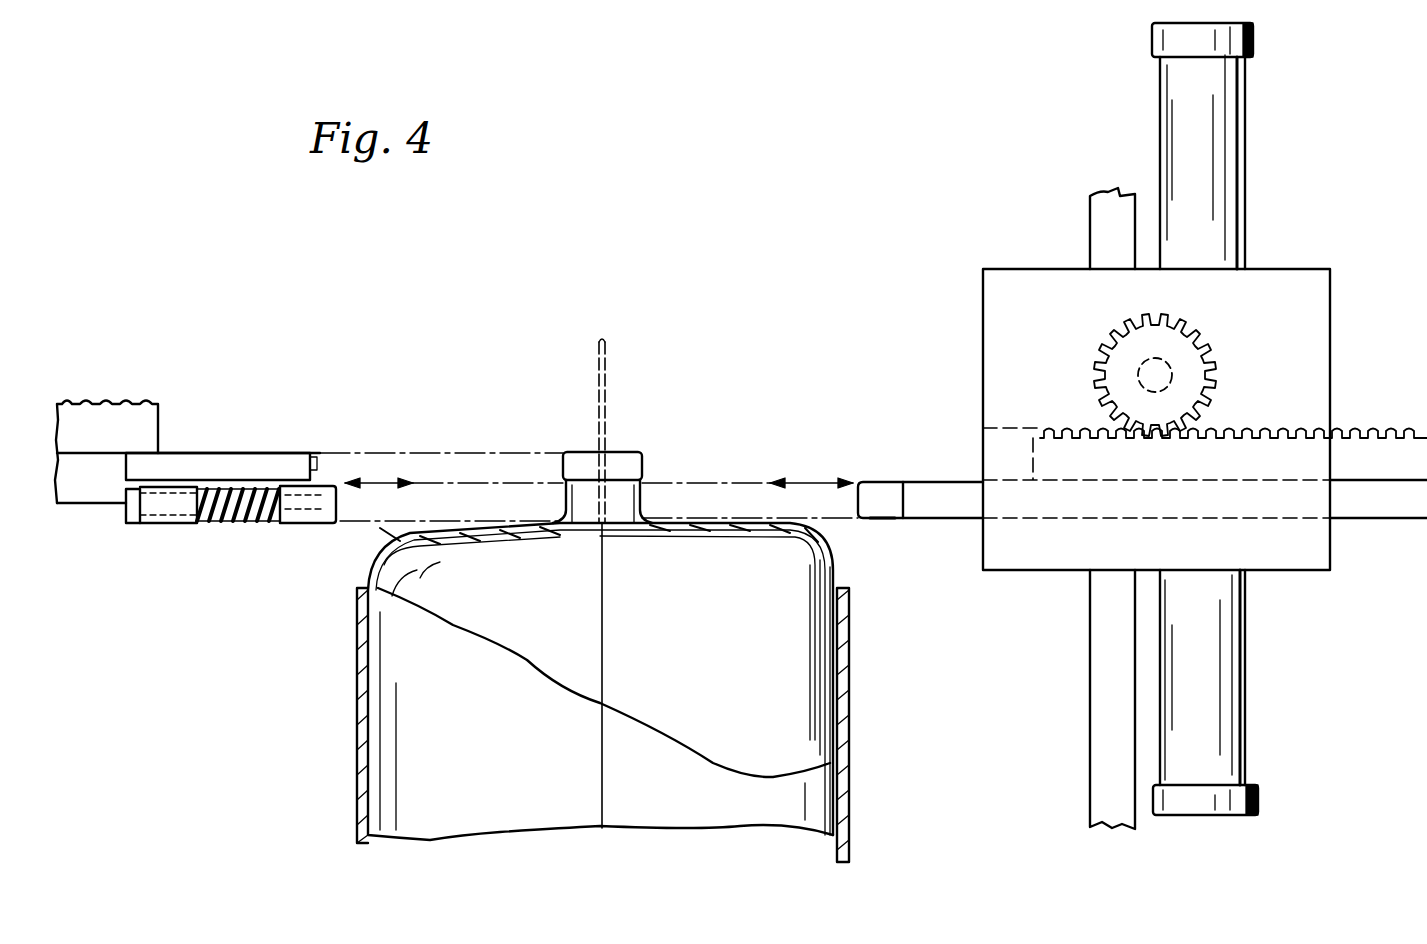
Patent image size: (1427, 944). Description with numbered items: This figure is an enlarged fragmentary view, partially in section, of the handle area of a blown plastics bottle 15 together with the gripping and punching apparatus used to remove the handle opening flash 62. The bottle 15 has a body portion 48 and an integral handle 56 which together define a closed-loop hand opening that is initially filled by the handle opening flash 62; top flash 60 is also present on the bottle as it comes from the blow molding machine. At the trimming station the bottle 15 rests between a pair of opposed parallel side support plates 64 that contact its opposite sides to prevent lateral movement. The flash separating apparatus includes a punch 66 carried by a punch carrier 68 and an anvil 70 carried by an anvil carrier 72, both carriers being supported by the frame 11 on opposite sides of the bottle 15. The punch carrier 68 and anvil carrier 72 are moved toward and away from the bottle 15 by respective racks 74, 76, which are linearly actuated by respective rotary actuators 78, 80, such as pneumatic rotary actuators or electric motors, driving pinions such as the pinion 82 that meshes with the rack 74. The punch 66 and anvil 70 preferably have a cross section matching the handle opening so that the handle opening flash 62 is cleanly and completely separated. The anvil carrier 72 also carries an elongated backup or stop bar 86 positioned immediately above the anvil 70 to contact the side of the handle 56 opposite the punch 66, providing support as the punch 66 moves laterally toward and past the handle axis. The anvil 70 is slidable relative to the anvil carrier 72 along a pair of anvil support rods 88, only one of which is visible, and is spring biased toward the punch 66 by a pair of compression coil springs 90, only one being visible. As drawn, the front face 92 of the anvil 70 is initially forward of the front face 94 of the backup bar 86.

The frame 11 is at (1098, 705).
The plastics bottle 15 is at (490, 858).
The body portion 48 is at (812, 800).
The handle 56 is at (640, 452).
The top flash 60 is at (607, 375).
The handle opening flash 62 is at (645, 503).
The side support plates 64 is at (354, 700).
The punch 66 is at (877, 490).
The punch carrier 68 is at (940, 512).
The anvil 70 is at (317, 521).
The anvil carrier 72 is at (102, 493).
The rack 74 is at (1373, 440).
The rack 76 is at (113, 410).
The rotary actuator 78 is at (1250, 262).
The rotary actuator 80 is at (1205, 419).
The pinion 82 is at (1218, 350).
The backup bar 86 is at (245, 460).
The anvil support rods 88 is at (247, 512).
The compression coil springs 90 is at (212, 513).
The front face of anvil 92 is at (340, 508).
The front face of backup bar 94 is at (312, 466).